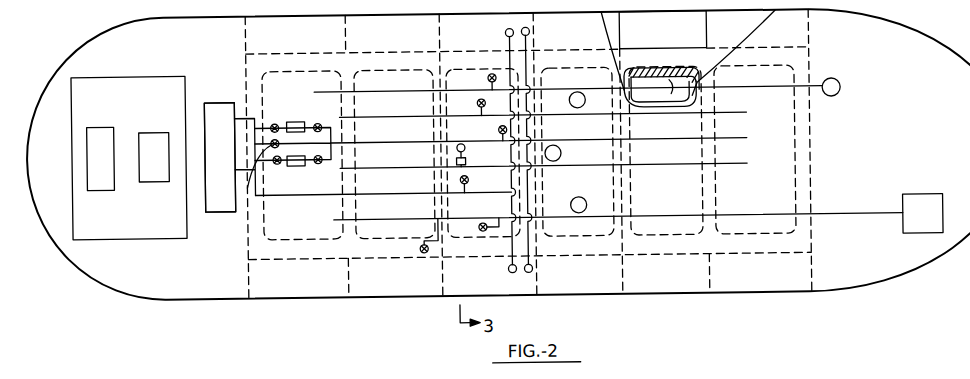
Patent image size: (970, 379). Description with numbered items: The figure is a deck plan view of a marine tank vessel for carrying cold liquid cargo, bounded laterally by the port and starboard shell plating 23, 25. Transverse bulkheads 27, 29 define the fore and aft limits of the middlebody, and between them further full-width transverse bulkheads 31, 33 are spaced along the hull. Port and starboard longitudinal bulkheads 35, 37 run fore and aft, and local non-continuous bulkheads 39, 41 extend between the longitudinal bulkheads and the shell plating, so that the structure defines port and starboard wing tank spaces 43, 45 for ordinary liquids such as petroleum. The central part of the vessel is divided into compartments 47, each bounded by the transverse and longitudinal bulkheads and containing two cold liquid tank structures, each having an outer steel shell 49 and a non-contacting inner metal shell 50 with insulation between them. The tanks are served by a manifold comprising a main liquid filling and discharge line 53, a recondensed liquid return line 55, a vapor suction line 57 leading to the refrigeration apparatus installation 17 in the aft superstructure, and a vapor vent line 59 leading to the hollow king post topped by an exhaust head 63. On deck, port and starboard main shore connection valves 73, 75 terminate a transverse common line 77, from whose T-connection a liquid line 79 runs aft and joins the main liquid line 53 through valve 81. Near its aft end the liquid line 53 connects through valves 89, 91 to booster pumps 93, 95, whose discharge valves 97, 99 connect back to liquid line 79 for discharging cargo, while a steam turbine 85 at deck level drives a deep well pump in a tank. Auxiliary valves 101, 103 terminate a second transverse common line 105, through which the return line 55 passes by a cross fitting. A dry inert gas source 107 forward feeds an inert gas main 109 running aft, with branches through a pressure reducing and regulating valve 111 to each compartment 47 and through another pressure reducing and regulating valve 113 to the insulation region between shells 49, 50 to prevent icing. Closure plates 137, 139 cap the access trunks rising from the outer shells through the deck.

The refrigeration apparatus installation 17 is at (211, 99).
The port shell plating 23 is at (682, 6).
The starboard shell plating 25 is at (650, 295).
The transverse bulkhead 27 is at (810, 163).
The transverse bulkhead 29 is at (247, 266).
The transverse bulkhead 31 is at (622, 275).
The transverse bulkhead 33 is at (437, 28).
The port longitudinal bulkhead 35 is at (399, 51).
The starboard longitudinal bulkhead 37 is at (751, 258).
The local non-continuous bulkhead 39 is at (708, 26).
The local non-continuous bulkhead 41 is at (708, 277).
The wing tank space 43 is at (683, 44).
The wing tank space 45 is at (681, 284).
The compartment 47 is at (542, 249).
The outer steel shell 49 is at (666, 66).
The inner metal shell 50 is at (673, 86).
The main liquid filling and discharge line 53 is at (390, 142).
The recondensed liquid return line 55 is at (407, 167).
The vapor suction line 57 is at (408, 116).
The vapor vent line 59 is at (388, 91).
The exhaust head 63 is at (839, 85).
The main shore connection valve 73 is at (540, 25).
The main shore connection valve 75 is at (527, 274).
The common line 77 is at (527, 62).
The liquid line 79 is at (391, 193).
The valve 81 is at (237, 209).
The steam turbine 85 is at (561, 154).
The valve 89 is at (319, 121).
The valve 91 is at (318, 162).
The booster pump 93 is at (296, 119).
The booster pump 95 is at (296, 164).
The discharge valve 97 is at (275, 121).
The discharge valve 99 is at (277, 162).
The valve 101 is at (507, 32).
The valve 103 is at (507, 270).
The common line 105 is at (508, 61).
The dry inert gas source 107 is at (923, 214).
The inert gas main 109 is at (860, 215).
The pressure reducing and regulating valve 111 is at (416, 246).
The pressure reducing and regulating valve 113 is at (482, 231).
The closure plate 137 is at (586, 103).
The closure plate 139 is at (572, 203).